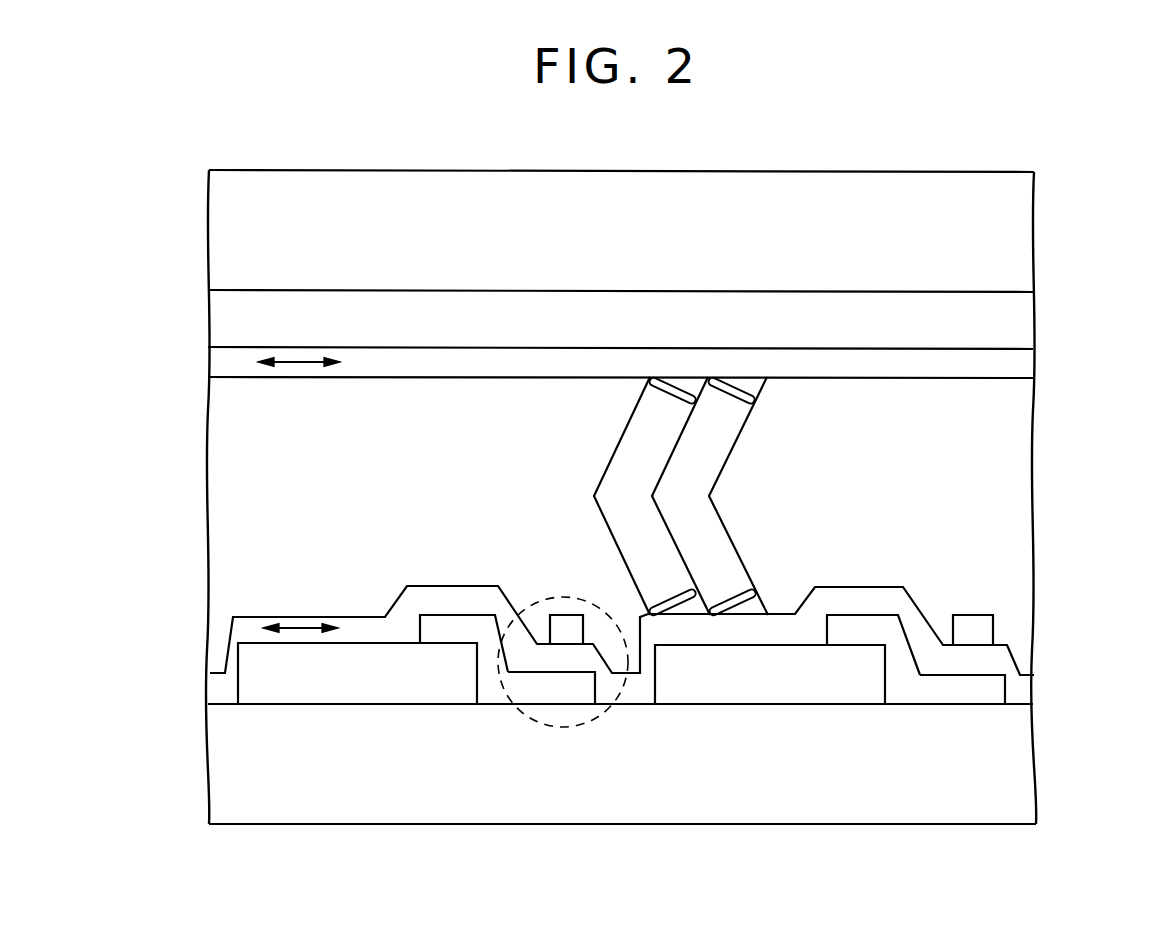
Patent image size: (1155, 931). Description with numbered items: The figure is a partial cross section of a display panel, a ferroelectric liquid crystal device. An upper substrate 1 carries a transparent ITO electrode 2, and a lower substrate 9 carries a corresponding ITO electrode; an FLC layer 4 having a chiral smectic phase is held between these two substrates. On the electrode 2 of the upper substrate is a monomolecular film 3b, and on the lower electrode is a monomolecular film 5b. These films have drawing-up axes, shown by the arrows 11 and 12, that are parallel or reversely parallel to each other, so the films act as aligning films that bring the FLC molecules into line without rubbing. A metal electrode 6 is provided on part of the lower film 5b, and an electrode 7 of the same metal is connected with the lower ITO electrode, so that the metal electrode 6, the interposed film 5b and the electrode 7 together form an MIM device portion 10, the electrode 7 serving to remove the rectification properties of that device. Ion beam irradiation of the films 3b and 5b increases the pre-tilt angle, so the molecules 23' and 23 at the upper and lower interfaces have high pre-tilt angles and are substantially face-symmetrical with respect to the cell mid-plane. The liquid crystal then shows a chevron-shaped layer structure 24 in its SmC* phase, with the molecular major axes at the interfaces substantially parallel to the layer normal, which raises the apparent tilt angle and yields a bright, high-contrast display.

The upper substrate 1 is at (1027, 202).
The ITO electrode 2 is at (1018, 318).
The monomolecular film 3b is at (1017, 366).
The FLC layer 4 is at (1017, 468).
The monomolecular film 5b is at (902, 602).
The metal electrode 6 is at (983, 632).
The electrode 7 is at (985, 692).
The lower substrate 9 is at (230, 758).
The MIM device portion 10 is at (538, 727).
The arrow 11 is at (300, 360).
The arrow 12 is at (297, 625).
The molecules at the interface 23 is at (728, 578).
The molecules at the interface 23' is at (743, 412).
The chevron-shaped layer structure 24 is at (733, 455).